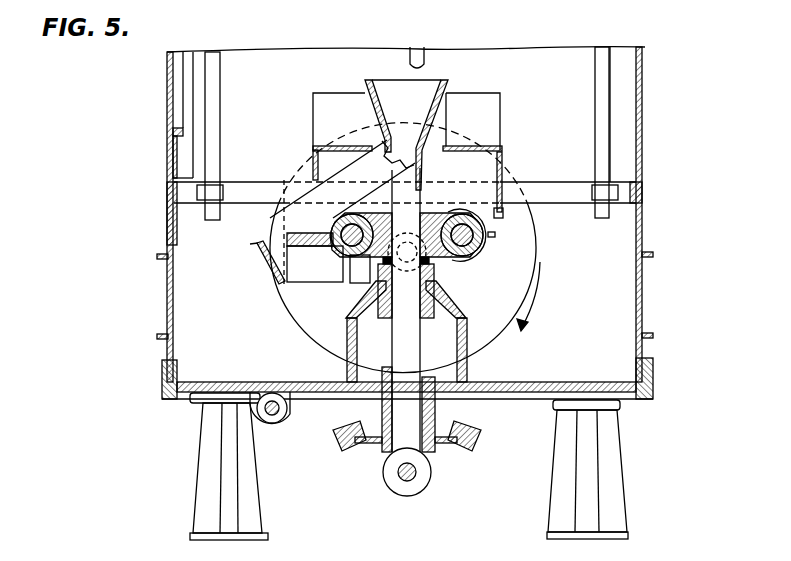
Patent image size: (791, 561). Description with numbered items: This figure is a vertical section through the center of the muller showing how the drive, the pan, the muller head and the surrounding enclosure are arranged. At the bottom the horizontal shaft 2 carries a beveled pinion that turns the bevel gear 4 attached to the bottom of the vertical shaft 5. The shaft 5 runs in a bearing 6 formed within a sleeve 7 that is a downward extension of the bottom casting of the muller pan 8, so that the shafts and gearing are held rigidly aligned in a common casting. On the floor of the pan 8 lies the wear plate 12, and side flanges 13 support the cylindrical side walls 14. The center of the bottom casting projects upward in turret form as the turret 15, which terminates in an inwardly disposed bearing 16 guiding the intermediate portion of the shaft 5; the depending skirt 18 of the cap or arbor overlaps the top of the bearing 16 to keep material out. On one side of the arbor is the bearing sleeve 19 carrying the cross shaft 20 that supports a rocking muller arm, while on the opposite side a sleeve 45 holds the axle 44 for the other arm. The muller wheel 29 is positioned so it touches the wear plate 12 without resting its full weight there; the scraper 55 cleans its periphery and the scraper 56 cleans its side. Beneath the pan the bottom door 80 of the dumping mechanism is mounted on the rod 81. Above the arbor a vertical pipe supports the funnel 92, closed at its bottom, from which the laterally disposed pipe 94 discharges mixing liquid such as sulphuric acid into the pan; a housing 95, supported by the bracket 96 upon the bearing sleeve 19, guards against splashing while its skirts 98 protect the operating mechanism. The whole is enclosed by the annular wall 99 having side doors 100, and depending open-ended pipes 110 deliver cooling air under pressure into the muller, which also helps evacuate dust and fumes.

The shaft 2 is at (417, 472).
The bevel gear 4 is at (347, 445).
The shaft 5 is at (397, 340).
The bearing 6 is at (380, 408).
The sleeve 7 is at (437, 412).
The muller pan 8 is at (317, 392).
The wear plate 12 is at (301, 381).
The side flanges 13 is at (162, 381).
The cylindrical side walls 14 is at (168, 289).
The turret 15 is at (349, 318).
The bearing 16 is at (436, 283).
The depending skirt 18 is at (441, 258).
The bearing sleeve 19 is at (466, 245).
The cross shaft 20 is at (480, 251).
The muller wheel 29 is at (301, 332).
The axle 44 is at (334, 218).
The sleeve 45 is at (340, 253).
The scraper 55 is at (273, 277).
The scraper 56 is at (296, 280).
The bottom door 80 is at (217, 382).
The rod 81 is at (275, 421).
The funnel 92 is at (388, 85).
The laterally disposed pipe 94 is at (282, 214).
The housing 95 is at (450, 112).
The bracket 96 is at (507, 221).
The skirts 98 is at (498, 127).
The annular wall 99 is at (643, 136).
The side doors 100 is at (170, 129).
The open-ended pipes 110 is at (212, 82).